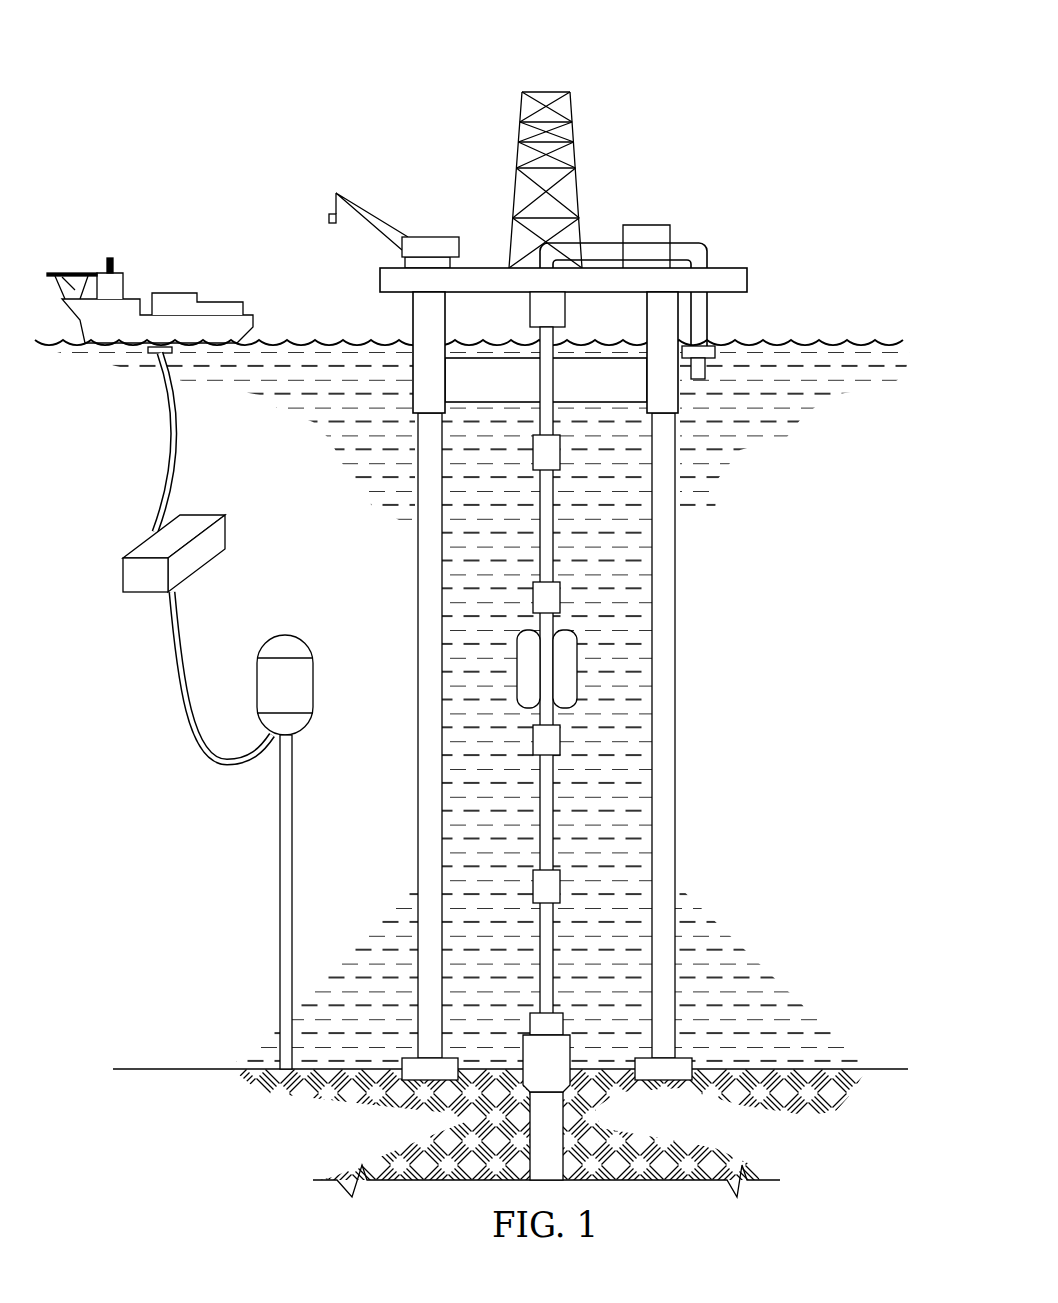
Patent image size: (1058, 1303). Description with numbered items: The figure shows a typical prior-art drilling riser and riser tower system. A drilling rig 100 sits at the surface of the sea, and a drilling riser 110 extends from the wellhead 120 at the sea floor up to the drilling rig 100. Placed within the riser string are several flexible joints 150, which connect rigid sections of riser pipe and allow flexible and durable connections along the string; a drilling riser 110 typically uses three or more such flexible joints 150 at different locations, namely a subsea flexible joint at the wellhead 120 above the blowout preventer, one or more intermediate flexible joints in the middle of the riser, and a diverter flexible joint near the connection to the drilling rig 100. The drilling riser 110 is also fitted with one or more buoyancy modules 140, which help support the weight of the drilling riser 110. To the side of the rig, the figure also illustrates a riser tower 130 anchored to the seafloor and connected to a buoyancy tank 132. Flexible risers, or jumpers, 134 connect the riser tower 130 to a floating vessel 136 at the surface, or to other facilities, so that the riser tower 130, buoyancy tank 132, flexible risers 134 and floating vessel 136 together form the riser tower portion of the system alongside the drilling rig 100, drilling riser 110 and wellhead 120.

The drilling rig 100 is at (684, 76).
The drilling riser 110 is at (560, 800).
The wellhead 120 is at (570, 1085).
The riser tower 130 is at (280, 893).
The buoyancy tank 132 is at (225, 530).
The flexible riser 134 is at (165, 480).
The floating vessel 136 is at (257, 322).
The buoyancy module 140 is at (572, 632).
The flexible joint 150 is at (530, 312).